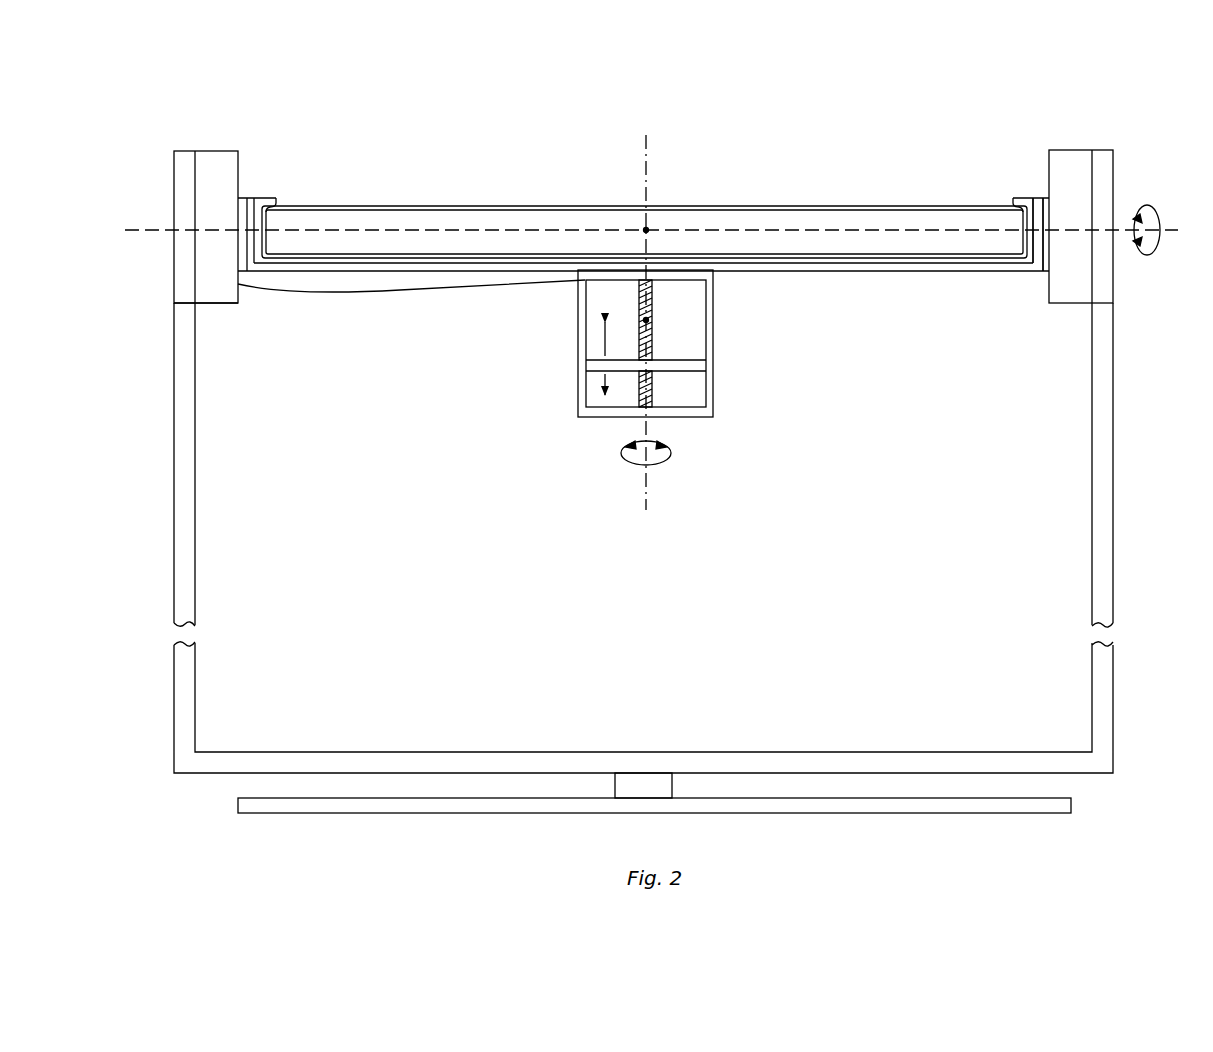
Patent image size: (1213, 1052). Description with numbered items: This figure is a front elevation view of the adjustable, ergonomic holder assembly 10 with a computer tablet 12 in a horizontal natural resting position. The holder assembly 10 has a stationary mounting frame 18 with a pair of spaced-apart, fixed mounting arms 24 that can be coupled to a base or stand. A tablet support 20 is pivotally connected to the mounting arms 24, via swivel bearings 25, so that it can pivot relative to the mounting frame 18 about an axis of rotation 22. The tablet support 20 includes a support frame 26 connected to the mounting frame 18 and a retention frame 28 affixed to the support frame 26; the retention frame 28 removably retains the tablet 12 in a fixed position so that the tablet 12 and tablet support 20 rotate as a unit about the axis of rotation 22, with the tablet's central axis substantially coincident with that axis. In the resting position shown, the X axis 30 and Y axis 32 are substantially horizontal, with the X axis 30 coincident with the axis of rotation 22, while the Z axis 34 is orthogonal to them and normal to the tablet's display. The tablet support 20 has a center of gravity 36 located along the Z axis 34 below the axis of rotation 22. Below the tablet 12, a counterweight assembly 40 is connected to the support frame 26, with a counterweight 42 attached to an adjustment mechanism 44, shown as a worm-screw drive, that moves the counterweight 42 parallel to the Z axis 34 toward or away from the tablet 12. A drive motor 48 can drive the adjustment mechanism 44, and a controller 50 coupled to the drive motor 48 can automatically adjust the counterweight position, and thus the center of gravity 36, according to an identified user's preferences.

The holder assembly 10 is at (185, 108).
The computer tablet 12 is at (320, 220).
The mounting frame 18 is at (1127, 708).
The tablet support 20 is at (643, 248).
The axis of rotation 22 is at (1118, 230).
The mounting arms 24 is at (1115, 338).
The swivel bearings 25 is at (246, 197).
The support frame 26 is at (1035, 197).
The retention frame 28 is at (1013, 200).
The X axis 30 is at (142, 230).
The Y axis 32 is at (646, 230).
The Z axis 34 is at (648, 152).
The center of gravity 36 is at (648, 321).
The counterweight assembly 40 is at (635, 367).
The counterweight 42 is at (598, 366).
The adjustment mechanism 44 is at (653, 382).
The drive motor 48 is at (600, 282).
The controller 50 is at (215, 297).